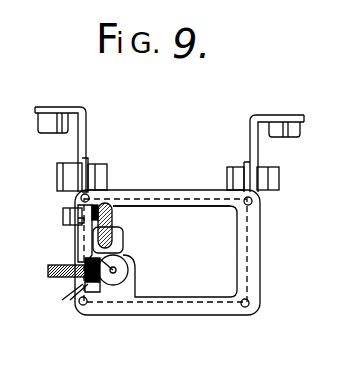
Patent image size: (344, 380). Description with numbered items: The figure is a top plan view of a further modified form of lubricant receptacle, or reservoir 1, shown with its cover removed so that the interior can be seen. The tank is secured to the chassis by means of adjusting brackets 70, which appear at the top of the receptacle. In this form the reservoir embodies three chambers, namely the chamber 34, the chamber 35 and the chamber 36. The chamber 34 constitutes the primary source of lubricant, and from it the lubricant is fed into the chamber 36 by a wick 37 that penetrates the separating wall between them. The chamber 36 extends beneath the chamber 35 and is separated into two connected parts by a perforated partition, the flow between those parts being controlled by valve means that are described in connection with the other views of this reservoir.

The mounting plate 1 is at (232, 248).
The adjusting bracket 70 is at (82, 166).
The chamber 34 is at (197, 220).
The wick 37 is at (97, 214).
The chamber 36 is at (123, 240).
The chamber 35 is at (165, 275).